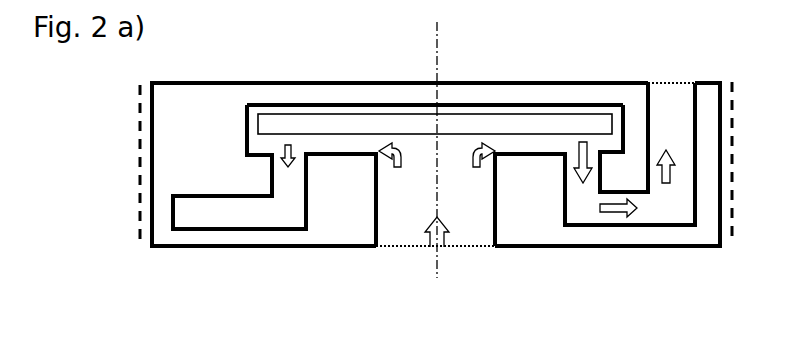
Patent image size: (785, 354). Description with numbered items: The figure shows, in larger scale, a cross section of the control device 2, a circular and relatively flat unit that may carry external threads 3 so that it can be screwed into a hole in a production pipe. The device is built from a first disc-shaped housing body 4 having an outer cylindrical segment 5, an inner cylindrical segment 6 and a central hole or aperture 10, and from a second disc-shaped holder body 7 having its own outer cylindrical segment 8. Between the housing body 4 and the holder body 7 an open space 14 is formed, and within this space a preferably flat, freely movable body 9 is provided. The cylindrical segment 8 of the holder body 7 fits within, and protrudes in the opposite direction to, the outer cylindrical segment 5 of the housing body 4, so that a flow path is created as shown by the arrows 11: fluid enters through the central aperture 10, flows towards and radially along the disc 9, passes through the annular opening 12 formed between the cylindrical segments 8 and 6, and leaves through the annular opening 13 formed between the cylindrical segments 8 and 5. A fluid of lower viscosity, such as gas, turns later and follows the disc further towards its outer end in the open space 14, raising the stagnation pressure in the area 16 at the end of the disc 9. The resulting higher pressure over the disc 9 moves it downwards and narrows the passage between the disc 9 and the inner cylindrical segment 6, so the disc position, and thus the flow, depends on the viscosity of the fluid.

The control device 2 is at (232, 262).
The external threads 3 is at (727, 84).
The first disc-shaped housing body 4 is at (668, 228).
The outer cylindrical segment 5 is at (703, 138).
The inner cylindrical segment 6 is at (515, 200).
The second disc-shaped holder body 7 is at (310, 97).
The outer cylindrical segment 8 is at (638, 123).
The freely movable body 9 is at (420, 127).
The central hole or aperture 10 is at (403, 183).
The arrows 11 is at (438, 247).
The annular opening 12 is at (580, 187).
The annular opening 13 is at (668, 138).
The open space 14 is at (243, 99).
The area at the end of the disc 16 is at (612, 137).